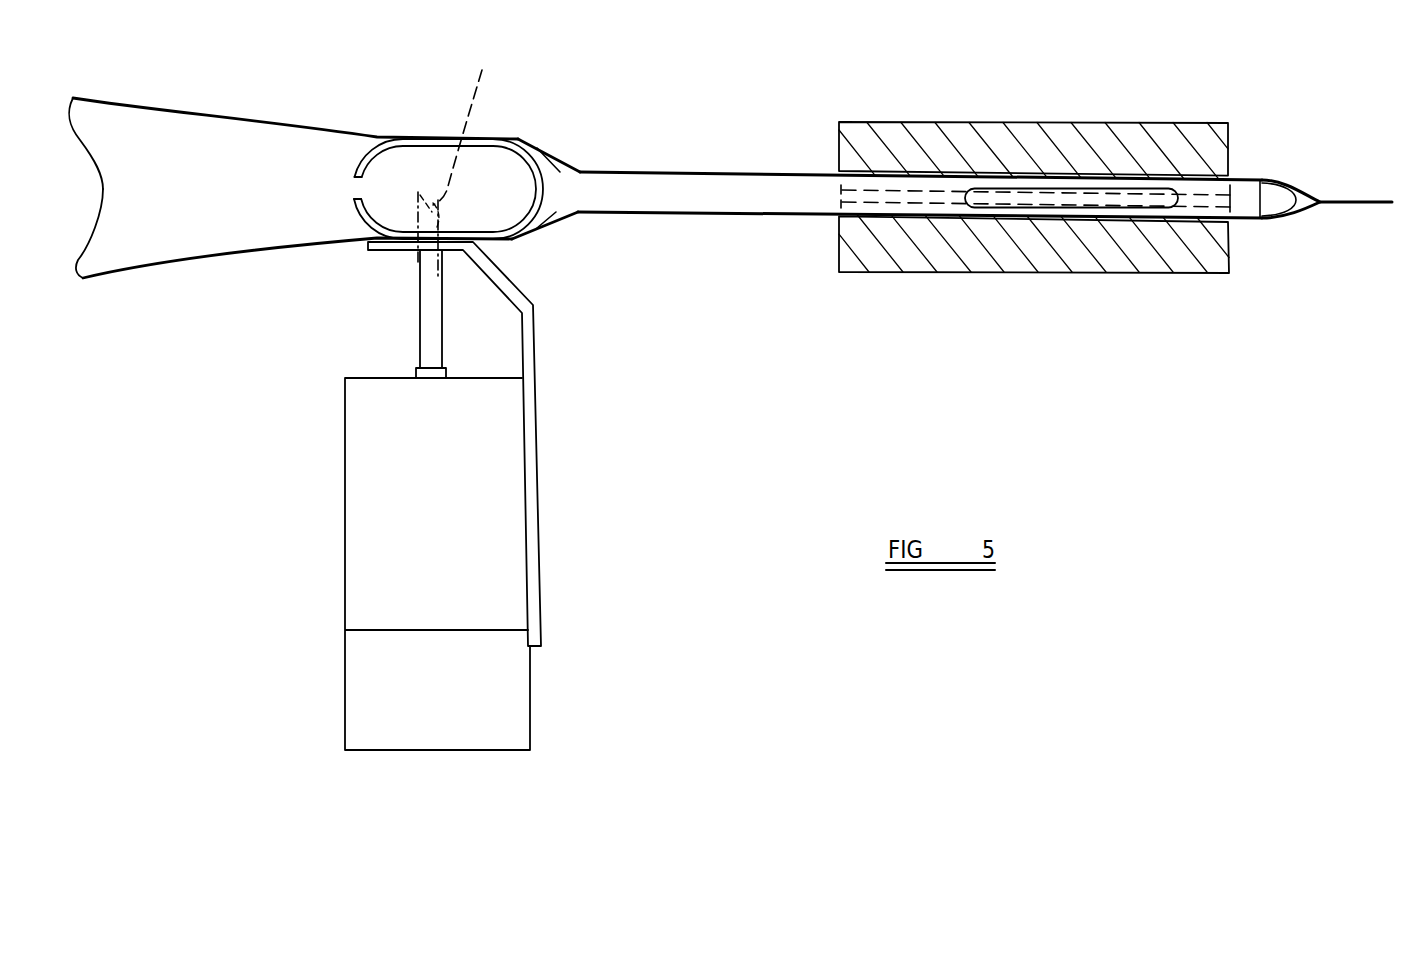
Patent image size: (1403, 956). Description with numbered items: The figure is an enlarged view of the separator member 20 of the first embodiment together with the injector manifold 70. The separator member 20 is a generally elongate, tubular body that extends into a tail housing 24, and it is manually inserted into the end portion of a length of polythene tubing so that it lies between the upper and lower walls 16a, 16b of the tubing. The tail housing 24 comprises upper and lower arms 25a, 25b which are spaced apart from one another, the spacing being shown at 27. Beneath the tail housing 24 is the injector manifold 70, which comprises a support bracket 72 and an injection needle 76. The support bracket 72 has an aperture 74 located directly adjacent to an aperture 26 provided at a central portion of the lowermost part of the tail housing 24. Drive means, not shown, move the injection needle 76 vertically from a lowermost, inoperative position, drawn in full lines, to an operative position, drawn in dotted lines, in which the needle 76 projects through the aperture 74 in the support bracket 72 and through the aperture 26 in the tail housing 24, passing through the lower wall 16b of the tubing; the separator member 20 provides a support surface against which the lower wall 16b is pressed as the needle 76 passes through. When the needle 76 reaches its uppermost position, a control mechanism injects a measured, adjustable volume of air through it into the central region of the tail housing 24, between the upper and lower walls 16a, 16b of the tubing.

The upper wall 16a is at (243, 120).
The lower wall 16b is at (235, 250).
The separator member 20 is at (721, 192).
The tail housing 24 is at (360, 157).
The upper arm 25a is at (532, 147).
The lower arm 25b is at (542, 223).
The aperture 26 is at (466, 129).
The spacing 27 is at (356, 187).
The injector manifold 70 is at (498, 538).
The support bracket 72 is at (537, 362).
The aperture 74 is at (420, 287).
The injection needle 76 is at (428, 348).